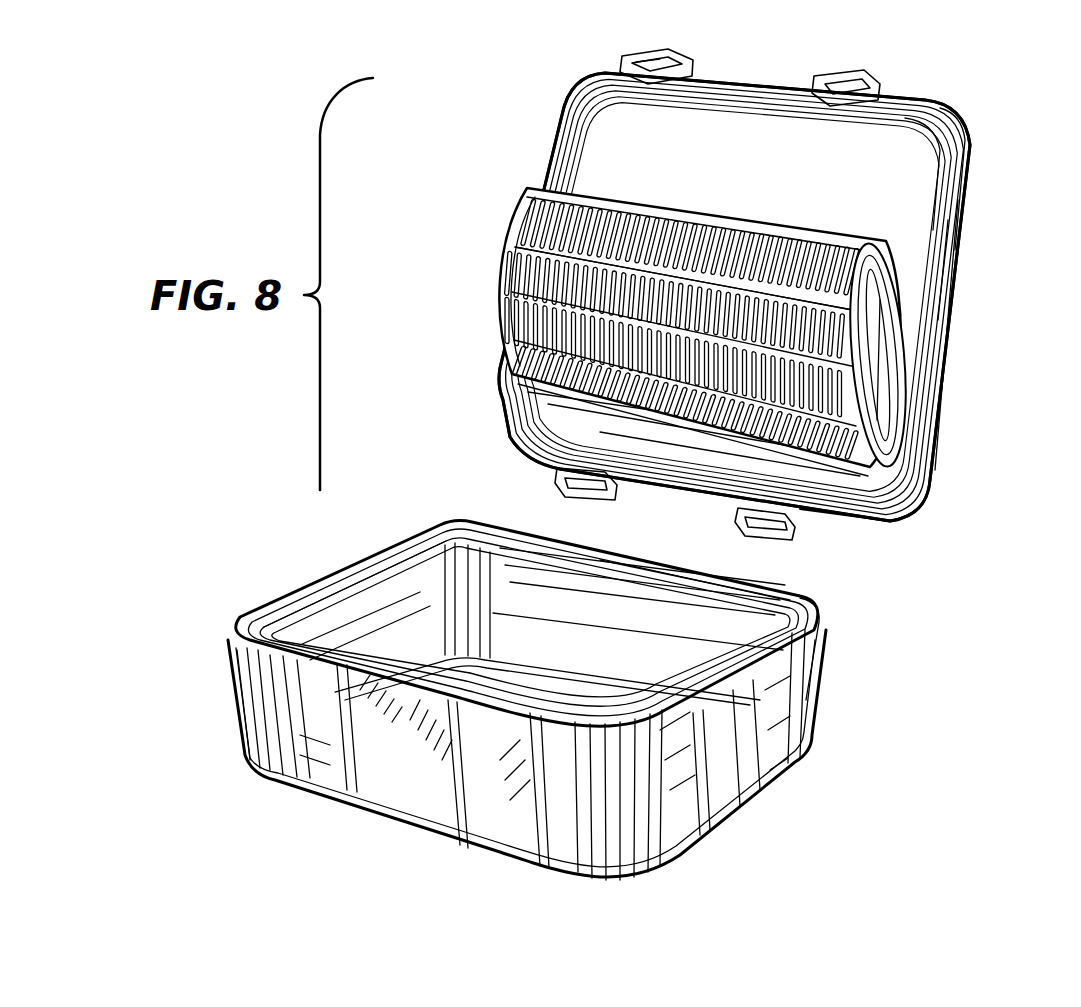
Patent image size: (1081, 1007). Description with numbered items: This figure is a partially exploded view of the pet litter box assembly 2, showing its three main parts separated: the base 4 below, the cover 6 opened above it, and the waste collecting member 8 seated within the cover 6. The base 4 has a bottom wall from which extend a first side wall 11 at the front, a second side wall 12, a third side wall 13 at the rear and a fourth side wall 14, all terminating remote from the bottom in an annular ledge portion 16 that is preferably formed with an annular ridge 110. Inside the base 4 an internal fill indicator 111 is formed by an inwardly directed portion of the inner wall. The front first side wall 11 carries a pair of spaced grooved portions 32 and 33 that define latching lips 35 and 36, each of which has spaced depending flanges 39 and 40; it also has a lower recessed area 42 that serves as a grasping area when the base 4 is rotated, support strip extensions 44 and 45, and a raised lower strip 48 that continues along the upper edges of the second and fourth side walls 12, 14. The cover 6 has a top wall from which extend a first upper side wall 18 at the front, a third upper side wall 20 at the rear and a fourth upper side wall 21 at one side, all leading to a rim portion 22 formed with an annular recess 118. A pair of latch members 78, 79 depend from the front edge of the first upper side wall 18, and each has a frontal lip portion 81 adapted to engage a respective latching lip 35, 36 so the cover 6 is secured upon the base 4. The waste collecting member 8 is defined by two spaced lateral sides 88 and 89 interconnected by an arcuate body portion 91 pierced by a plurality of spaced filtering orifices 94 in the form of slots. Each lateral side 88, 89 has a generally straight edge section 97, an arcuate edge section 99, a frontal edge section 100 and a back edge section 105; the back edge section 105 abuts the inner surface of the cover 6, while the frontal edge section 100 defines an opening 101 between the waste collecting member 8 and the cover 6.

The pet litter box assembly 2 is at (906, 72).
The base 4 is at (824, 678).
The cover 6 is at (956, 336).
The waste collecting member 8 is at (785, 215).
The first side wall 11 is at (386, 784).
The second side wall 12 is at (390, 655).
The third side wall 13 is at (545, 612).
The fourth side wall 14 is at (765, 750).
The annular ledge portion 16 is at (822, 636).
The first upper side wall 18 is at (728, 84).
The third upper side wall 20 is at (668, 497).
The fourth upper side wall 21 is at (950, 292).
The rim portion 22 is at (950, 142).
The grooved portion 32 is at (296, 782).
The grooved portion 33 is at (500, 822).
The latching lip 35 is at (298, 648).
The latching lip 36 is at (452, 812).
The depending flange 39 is at (308, 660).
The depending flange 40 is at (252, 713).
The lower recessed area 42 is at (405, 790).
The support strip extension 44 is at (268, 750).
The support strip extension 45 is at (540, 824).
The raised lower strip 48 is at (268, 655).
The latch member 78 is at (666, 60).
The latch member 79 is at (845, 72).
The frontal lip portion 81 is at (622, 62).
The lateral side 88 is at (502, 248).
The lateral side 89 is at (888, 378).
The body portion 91 is at (632, 238).
The filtering orifices 94 is at (705, 218).
The straight edge section 97 is at (893, 437).
The arcuate edge section 99 is at (852, 340).
The frontal edge section 100 is at (940, 252).
The opening 101 is at (912, 118).
The back edge section 105 is at (556, 470).
The annular ridge 110 is at (760, 584).
The internal fill indicator 111 is at (448, 600).
The annular recess 118 is at (876, 514).